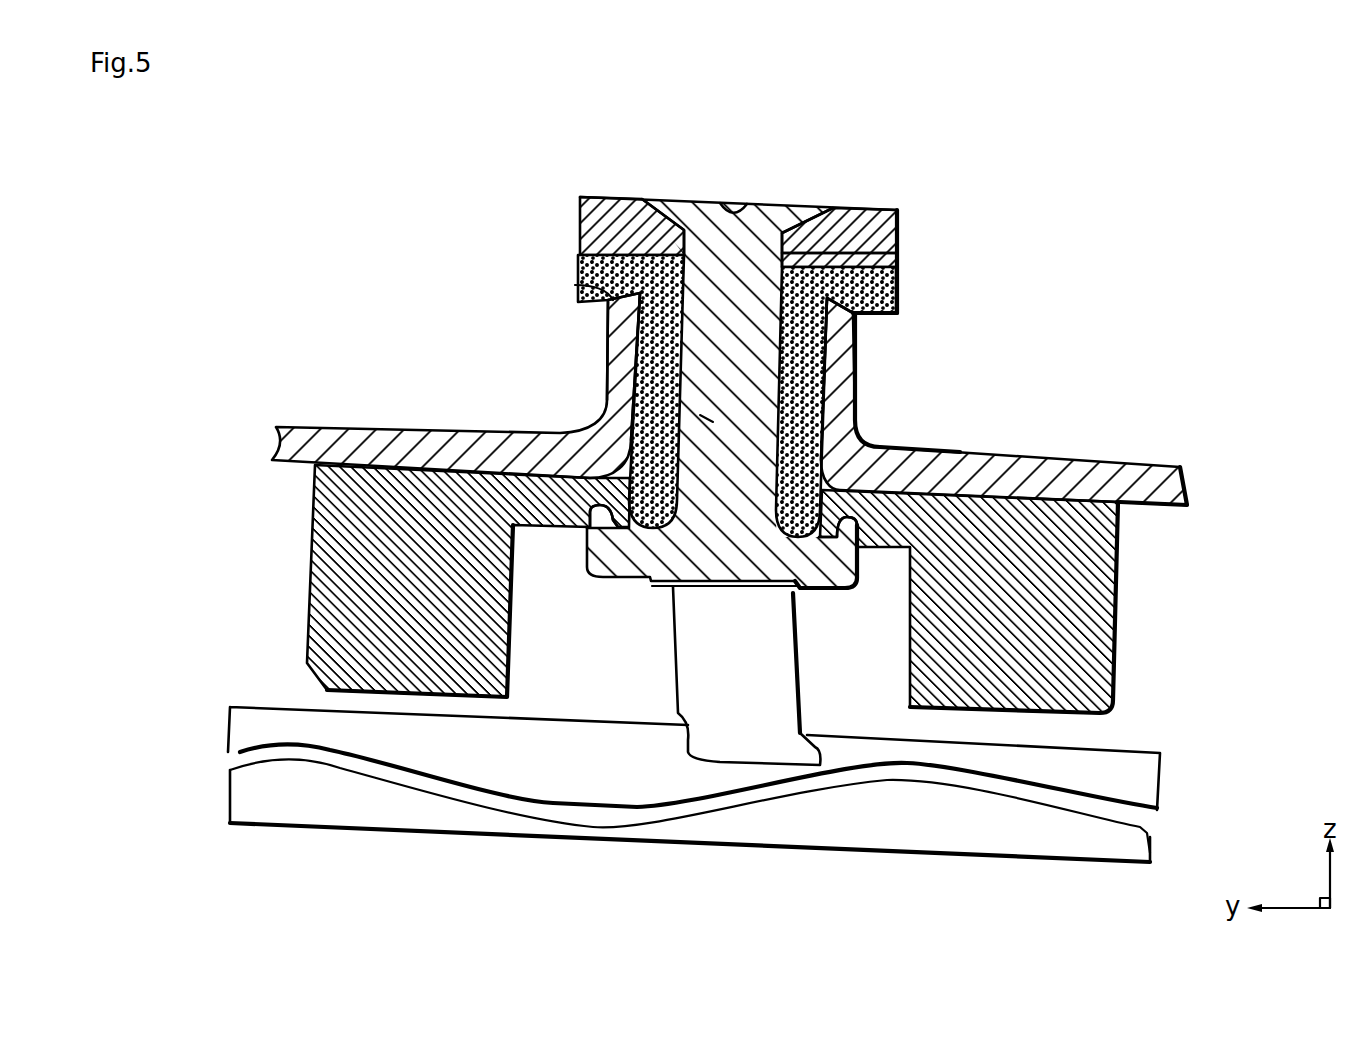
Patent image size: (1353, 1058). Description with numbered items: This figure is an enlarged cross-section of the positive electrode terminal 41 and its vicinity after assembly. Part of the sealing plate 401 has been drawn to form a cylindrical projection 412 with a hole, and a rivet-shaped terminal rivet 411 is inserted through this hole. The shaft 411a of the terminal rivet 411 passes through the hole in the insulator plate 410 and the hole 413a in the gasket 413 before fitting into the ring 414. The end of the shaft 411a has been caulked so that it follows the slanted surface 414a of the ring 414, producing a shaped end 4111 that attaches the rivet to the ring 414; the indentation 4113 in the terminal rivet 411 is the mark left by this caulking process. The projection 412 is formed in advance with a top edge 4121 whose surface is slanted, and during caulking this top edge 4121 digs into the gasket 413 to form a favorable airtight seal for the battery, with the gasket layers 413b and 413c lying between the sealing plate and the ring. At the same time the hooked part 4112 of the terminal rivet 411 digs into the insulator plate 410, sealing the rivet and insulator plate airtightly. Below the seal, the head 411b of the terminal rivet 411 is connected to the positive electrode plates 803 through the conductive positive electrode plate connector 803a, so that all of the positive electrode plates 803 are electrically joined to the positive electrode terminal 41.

The positive electrode terminal 41 is at (917, 198).
The shaped end 4111 is at (672, 197).
The hooked part 4112 is at (585, 522).
The indentation 4113 is at (740, 207).
The ring 414 is at (900, 222).
The slanted surface 414a is at (820, 208).
The gasket 413 is at (1015, 247).
The hole 413a is at (857, 335).
The second layer of elastic member 413b is at (898, 292).
The third layer of elastic member 413c is at (898, 253).
The cylindrical projection 412 is at (857, 373).
The top edge 4121 is at (575, 285).
The terminal rivet 411 is at (852, 592).
The shaft 411a is at (713, 422).
The head 411b is at (640, 583).
The sealing plate 401 is at (1010, 455).
The insulator plate 410 is at (1113, 623).
The positive electrode plates 803 is at (1122, 782).
The positive electrode plate connector 803a is at (770, 745).